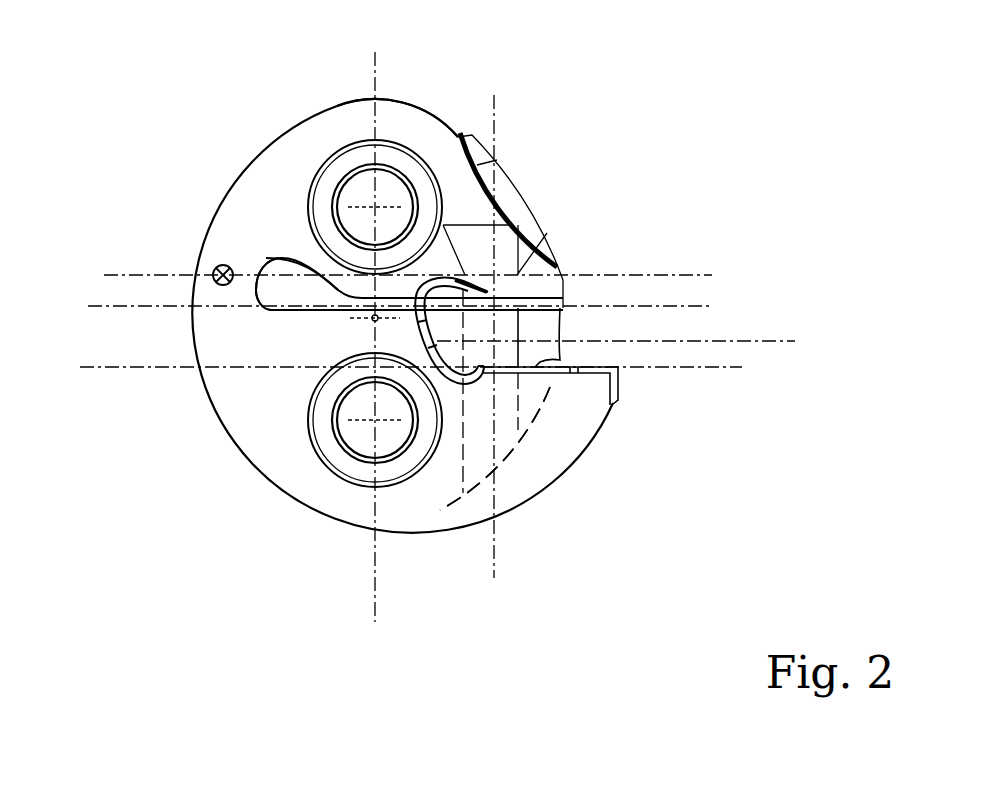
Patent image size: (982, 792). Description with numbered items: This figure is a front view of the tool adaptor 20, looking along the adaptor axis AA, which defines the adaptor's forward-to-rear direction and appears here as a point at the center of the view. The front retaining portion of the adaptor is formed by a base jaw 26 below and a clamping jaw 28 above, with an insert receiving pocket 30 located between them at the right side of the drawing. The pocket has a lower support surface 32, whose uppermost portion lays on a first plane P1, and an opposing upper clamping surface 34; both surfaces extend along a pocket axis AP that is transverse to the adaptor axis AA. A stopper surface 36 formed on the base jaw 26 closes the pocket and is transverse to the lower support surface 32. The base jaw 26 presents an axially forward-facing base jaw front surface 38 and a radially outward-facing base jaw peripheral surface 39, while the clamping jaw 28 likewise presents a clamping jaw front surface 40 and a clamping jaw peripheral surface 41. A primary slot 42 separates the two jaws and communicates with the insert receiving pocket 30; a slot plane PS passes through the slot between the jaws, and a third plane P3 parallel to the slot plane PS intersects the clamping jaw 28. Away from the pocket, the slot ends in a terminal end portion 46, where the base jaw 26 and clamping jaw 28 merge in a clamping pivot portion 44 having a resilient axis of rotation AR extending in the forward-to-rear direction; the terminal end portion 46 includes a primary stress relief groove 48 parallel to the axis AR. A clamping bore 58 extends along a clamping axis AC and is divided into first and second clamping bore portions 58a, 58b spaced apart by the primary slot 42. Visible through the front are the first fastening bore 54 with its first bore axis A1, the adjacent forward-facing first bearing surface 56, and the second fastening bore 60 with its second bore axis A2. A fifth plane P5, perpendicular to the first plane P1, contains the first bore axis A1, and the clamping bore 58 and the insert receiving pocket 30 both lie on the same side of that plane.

The tool adaptor 20 is at (551, 146).
The base jaw 26 is at (316, 487).
The clamping jaw 28 is at (305, 160).
The insert receiving pocket 30 is at (547, 340).
The lower support surface 32 is at (604, 363).
The upper clamping surface 34 is at (543, 300).
The stopper surface 36 is at (440, 334).
The base jaw front surface 38 is at (257, 422).
The base jaw peripheral surface 39 is at (549, 499).
The clamping jaw front surface 40 is at (257, 224).
The clamping jaw peripheral surface 41 is at (426, 101).
The primary slot 42 is at (330, 300).
The clamping pivot portion 44 is at (228, 245).
The terminal end portion 46 is at (266, 289).
The primary stress relief groove 48 is at (280, 270).
The first fastening bore 54 is at (353, 186).
The first bearing surface 56 is at (316, 200).
The clamping bore 58 is at (481, 452).
The first clamping bore portion 58a is at (514, 280).
The second clamping bore portion 58b is at (507, 412).
The second fastening bore 60 is at (359, 442).
The first bore axis A1 is at (376, 208).
The second bore axis A2 is at (376, 421).
The adaptor axis AA is at (371, 321).
The resilient axis of rotation AR is at (214, 267).
The clamping axis AC is at (500, 334).
The pocket axis AP is at (633, 341).
The first plane P1 is at (408, 367).
The third plane P3 is at (405, 275).
The fifth plane P5 is at (374, 335).
The slot plane PS is at (396, 306).